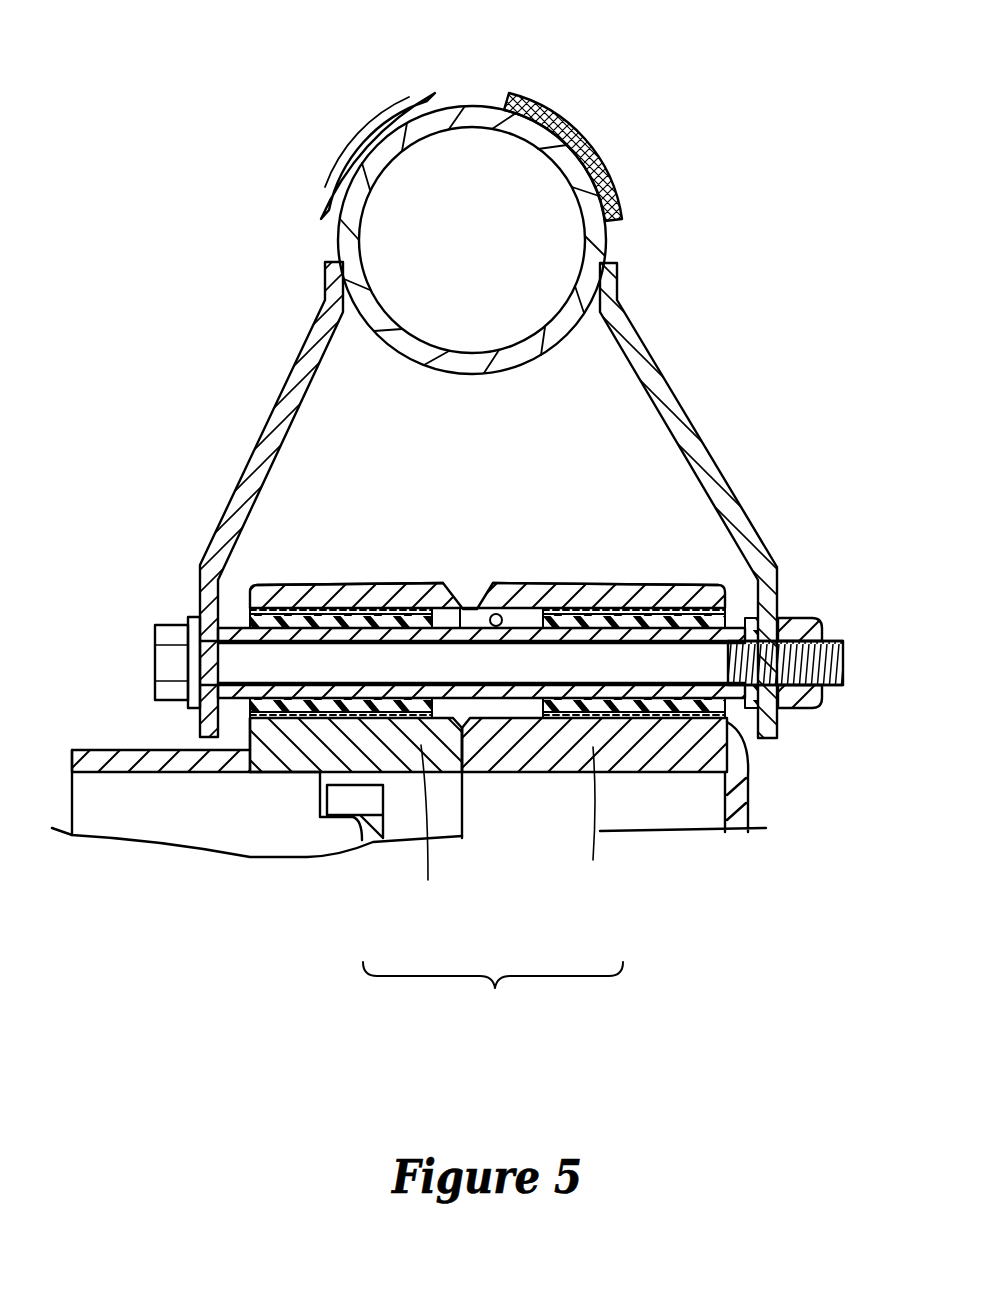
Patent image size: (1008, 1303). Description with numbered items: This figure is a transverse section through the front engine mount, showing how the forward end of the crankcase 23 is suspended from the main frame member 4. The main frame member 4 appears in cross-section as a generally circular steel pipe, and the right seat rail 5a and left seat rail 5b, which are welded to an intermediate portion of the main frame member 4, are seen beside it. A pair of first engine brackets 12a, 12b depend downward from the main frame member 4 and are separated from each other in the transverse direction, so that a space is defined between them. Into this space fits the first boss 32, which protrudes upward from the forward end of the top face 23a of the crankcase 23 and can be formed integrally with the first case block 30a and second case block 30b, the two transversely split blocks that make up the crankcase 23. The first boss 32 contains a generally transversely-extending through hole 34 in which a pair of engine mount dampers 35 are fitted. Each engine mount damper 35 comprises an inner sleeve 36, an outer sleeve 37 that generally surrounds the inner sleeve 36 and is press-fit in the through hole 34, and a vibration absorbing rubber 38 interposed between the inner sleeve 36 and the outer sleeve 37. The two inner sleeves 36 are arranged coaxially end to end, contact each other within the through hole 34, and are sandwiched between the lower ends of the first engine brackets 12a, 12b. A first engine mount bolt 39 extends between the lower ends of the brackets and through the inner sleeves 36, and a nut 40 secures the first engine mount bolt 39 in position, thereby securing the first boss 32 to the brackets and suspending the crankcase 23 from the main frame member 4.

The main frame member 4 is at (465, 112).
The right seat rail 5a is at (351, 143).
The left seat rail 5b is at (590, 130).
The first engine bracket 12a is at (290, 387).
The first engine bracket 12b is at (662, 375).
The crankcase 23 is at (493, 997).
The top face 23a is at (150, 748).
The first case block 30a is at (356, 845).
The second case block 30b is at (614, 845).
The first boss 32 is at (410, 585).
The through hole 34 is at (493, 607).
The engine mount damper 35 is at (598, 583).
The inner sleeve 36 is at (672, 640).
The outer sleeve 37 is at (263, 720).
The vibration absorbing rubber 38 is at (672, 718).
The first engine mount bolt 39 is at (170, 663).
The nut 40 is at (803, 625).